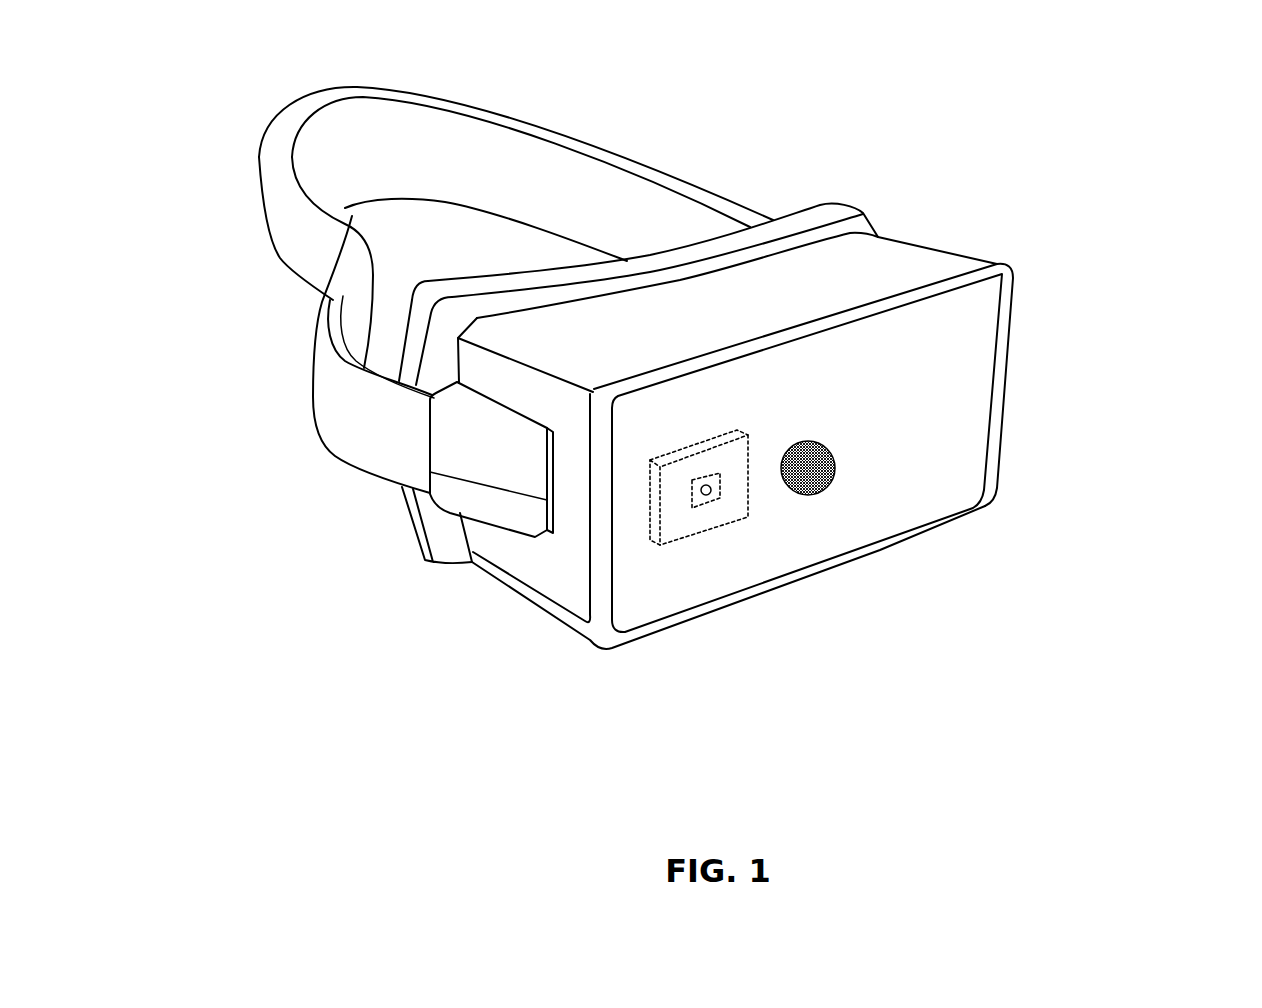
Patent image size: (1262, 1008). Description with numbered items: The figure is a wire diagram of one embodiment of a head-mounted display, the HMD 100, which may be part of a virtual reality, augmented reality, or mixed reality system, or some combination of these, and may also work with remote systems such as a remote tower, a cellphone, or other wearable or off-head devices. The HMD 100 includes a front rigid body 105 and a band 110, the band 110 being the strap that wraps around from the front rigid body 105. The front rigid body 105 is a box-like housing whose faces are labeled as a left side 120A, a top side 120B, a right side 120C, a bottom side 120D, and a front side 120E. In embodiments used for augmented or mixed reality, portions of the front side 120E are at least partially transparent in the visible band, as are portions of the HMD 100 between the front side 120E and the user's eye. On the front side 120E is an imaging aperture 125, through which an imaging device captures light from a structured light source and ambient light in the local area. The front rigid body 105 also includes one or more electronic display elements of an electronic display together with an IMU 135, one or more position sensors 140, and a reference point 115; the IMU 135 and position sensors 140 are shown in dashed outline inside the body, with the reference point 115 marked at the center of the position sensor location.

The HMD 100 is at (702, 437).
The band 110 is at (642, 165).
The front rigid body 105 is at (1002, 270).
The left side 120A is at (973, 243).
The top side 120B is at (558, 328).
The right side 120C is at (560, 562).
The bottom side 120D is at (500, 600).
The front side 120E is at (638, 597).
The imaging aperture 125 is at (837, 470).
The IMU 135 is at (748, 502).
The reference point 115 is at (708, 495).
The position sensors 140 is at (692, 508).